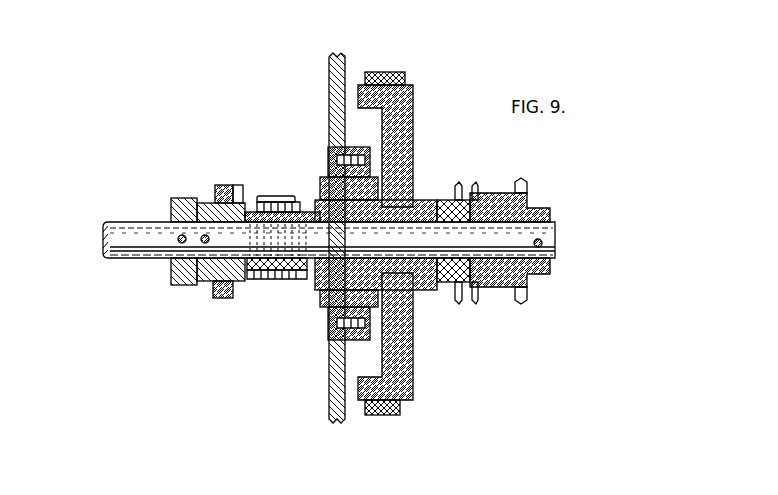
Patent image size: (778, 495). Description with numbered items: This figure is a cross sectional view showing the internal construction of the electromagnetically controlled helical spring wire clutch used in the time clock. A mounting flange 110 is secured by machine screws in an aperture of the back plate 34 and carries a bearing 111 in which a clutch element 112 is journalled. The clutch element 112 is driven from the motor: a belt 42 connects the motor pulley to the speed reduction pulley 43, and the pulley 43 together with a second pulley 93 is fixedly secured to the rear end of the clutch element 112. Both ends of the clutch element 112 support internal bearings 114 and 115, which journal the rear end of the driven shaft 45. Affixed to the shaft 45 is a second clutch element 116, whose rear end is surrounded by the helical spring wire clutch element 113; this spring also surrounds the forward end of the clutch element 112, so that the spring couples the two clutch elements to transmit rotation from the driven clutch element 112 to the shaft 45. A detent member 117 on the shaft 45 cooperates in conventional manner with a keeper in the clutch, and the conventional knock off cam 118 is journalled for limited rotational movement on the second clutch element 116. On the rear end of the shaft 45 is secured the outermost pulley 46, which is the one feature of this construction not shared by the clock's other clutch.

The back plate 34 is at (329, 77).
The belt 42 is at (395, 72).
The speed reduction pulley 43 is at (408, 123).
The driven shaft 45 is at (135, 253).
The pulley 46 is at (498, 193).
The pulley 93 is at (436, 284).
The mounting flange 110 is at (318, 302).
The bearing 111 is at (376, 183).
The clutch element 112 is at (330, 190).
The helical spring wire clutch element 113 is at (290, 283).
The internal bearing 114 is at (468, 268).
The internal bearing 115 is at (312, 200).
The second clutch element 116 is at (205, 281).
The detent member 117 is at (182, 197).
The knock off cam 118 is at (226, 185).